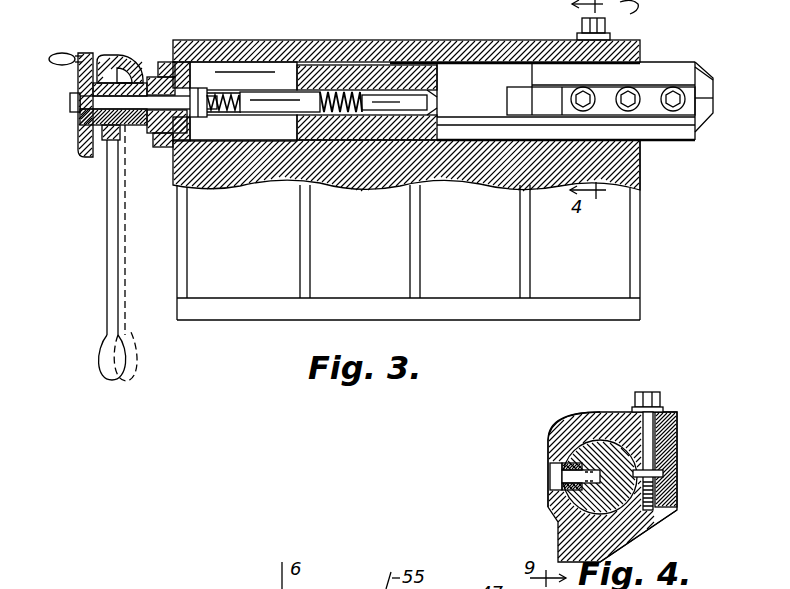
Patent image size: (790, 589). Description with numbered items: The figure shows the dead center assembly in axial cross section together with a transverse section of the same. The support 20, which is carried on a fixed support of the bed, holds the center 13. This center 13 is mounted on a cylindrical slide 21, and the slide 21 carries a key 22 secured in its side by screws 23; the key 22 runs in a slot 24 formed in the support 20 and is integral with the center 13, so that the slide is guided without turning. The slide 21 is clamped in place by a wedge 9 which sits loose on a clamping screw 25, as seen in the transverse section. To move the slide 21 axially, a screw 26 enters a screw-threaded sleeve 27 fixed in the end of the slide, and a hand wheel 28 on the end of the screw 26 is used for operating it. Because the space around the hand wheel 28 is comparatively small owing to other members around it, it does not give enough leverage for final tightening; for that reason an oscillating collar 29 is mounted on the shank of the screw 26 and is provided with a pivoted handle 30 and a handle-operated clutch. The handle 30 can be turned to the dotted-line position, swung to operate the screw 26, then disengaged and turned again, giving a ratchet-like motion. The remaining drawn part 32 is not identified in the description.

In FIG. 4, the wedge 9 is at (661, 426).
In FIG. 3, the center 13 is at (707, 89).
In FIG. 3, the support 20 is at (408, 230).
In FIG. 4, the support 20 is at (678, 509).
In FIG. 3, the cylindrical slide 21 is at (478, 90).
In FIG. 3, the key 22 is at (651, 97).
In FIG. 4, the key 22 is at (600, 440).
In FIG. 3, the screws 23 is at (628, 88).
In FIG. 4, the screws 23 is at (550, 478).
In FIG. 3, the slot 24 is at (532, 88).
In FIG. 4, the slot 24 is at (552, 440).
In FIG. 4, the clamping screw 25 is at (648, 392).
In FIG. 3, the screw 26 is at (261, 107).
In FIG. 3, the screw-threaded sleeve 27 is at (330, 110).
In FIG. 3, the hand wheel 28 is at (92, 155).
In FIG. 3, the oscillating collar 29 is at (132, 70).
In FIG. 3, the pivoted handle 30 is at (107, 271).
In FIG. 3, the bearing 32 is at (120, 128).